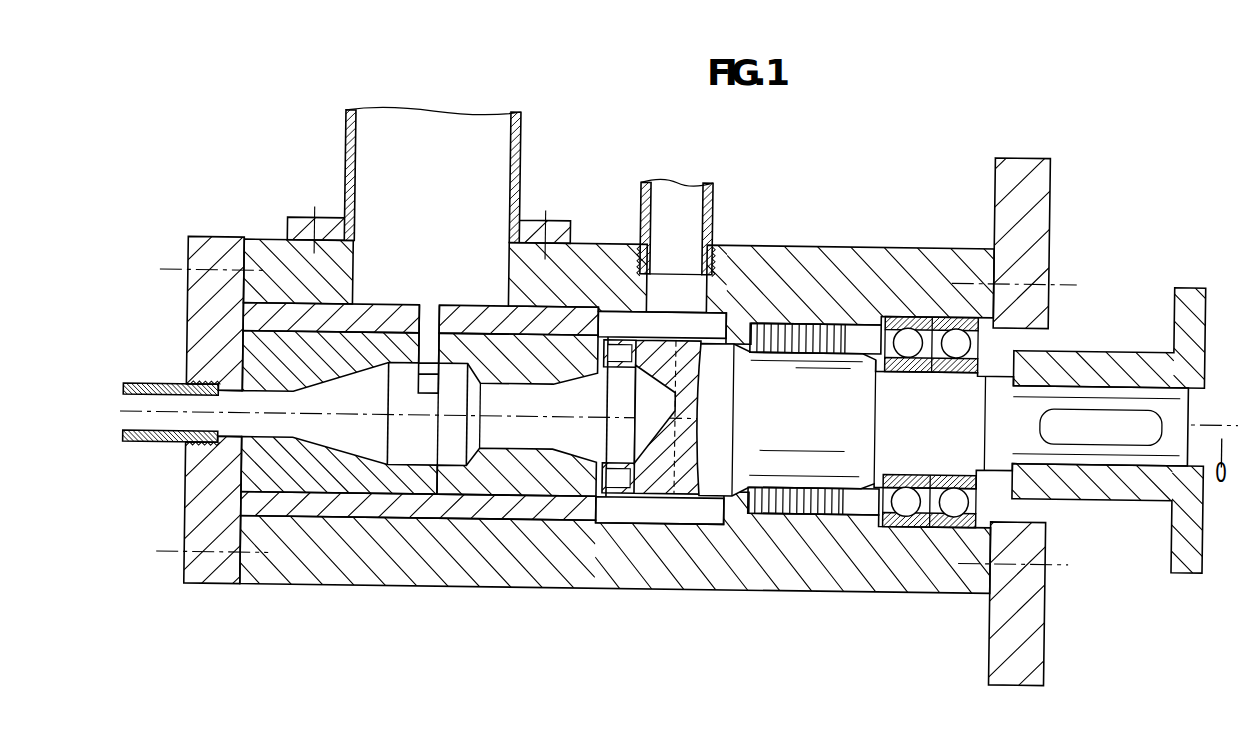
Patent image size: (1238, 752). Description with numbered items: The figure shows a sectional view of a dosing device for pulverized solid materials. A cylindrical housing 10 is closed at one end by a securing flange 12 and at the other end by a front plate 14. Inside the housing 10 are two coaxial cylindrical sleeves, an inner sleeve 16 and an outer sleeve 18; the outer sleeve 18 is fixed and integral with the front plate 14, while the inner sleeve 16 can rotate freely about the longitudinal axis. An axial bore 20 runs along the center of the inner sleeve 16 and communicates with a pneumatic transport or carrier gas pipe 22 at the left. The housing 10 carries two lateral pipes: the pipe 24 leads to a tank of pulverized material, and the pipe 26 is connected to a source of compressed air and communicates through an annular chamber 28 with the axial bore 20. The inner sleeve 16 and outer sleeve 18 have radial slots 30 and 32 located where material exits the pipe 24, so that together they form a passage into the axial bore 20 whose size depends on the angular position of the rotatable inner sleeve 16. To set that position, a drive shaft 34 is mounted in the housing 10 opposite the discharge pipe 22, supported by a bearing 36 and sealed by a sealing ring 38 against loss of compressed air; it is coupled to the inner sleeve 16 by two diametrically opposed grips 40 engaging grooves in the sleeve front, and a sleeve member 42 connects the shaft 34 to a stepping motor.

The cylindrical housing 10 is at (313, 574).
The securing flange 12 is at (1035, 183).
The front plate 14 is at (218, 574).
The inner sleeve 16 is at (383, 478).
The outer sleeve 18 is at (430, 510).
The axial bore 20 is at (507, 482).
The carrier gas pipe 22 is at (153, 440).
The lateral pipe 24 is at (513, 167).
The lateral pipe 26 is at (712, 206).
The annular chamber 28 is at (655, 520).
The radial slot 30 is at (433, 345).
The radial slot 32 is at (423, 318).
The drive shaft 34 is at (835, 492).
The bearing 36 is at (914, 528).
The sealing ring 38 is at (800, 512).
The grips 40 is at (612, 340).
The sleeve member 42 is at (1088, 358).